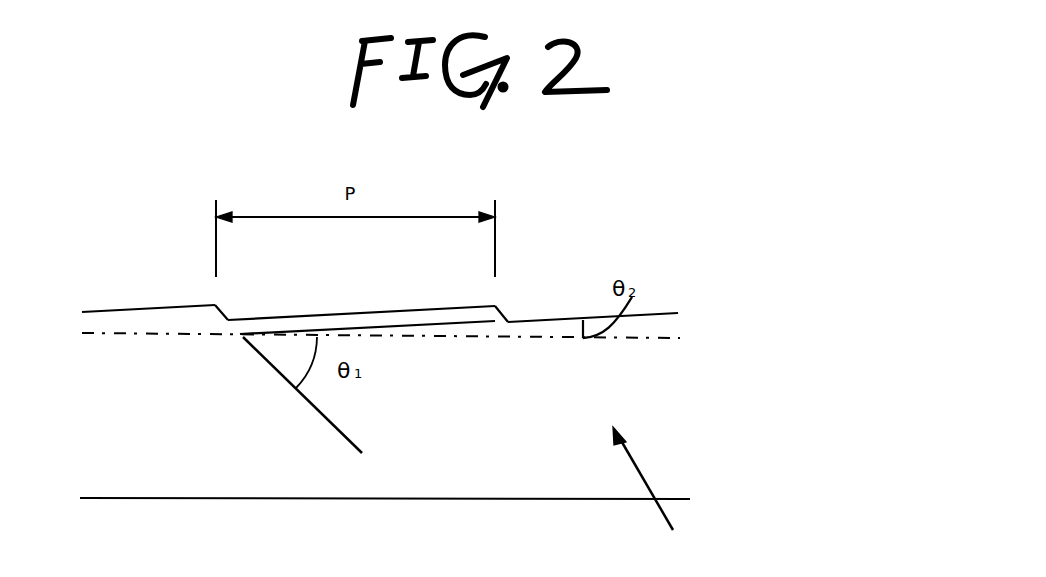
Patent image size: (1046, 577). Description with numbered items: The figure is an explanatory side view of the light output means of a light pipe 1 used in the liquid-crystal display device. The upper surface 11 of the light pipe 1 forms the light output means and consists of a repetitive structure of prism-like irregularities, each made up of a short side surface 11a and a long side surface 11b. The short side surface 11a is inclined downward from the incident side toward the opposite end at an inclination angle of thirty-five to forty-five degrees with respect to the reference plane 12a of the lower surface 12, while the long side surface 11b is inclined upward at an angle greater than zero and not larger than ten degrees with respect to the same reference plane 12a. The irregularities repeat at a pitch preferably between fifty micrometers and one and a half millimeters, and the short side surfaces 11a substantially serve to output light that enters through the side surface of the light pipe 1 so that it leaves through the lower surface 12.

The light pipe 1 is at (657, 489).
The upper surface 11 is at (522, 282).
The short side surface 11a is at (225, 315).
The long side surface 11b is at (358, 312).
The lower surface 12 is at (493, 499).
The reference plane 12a is at (433, 338).